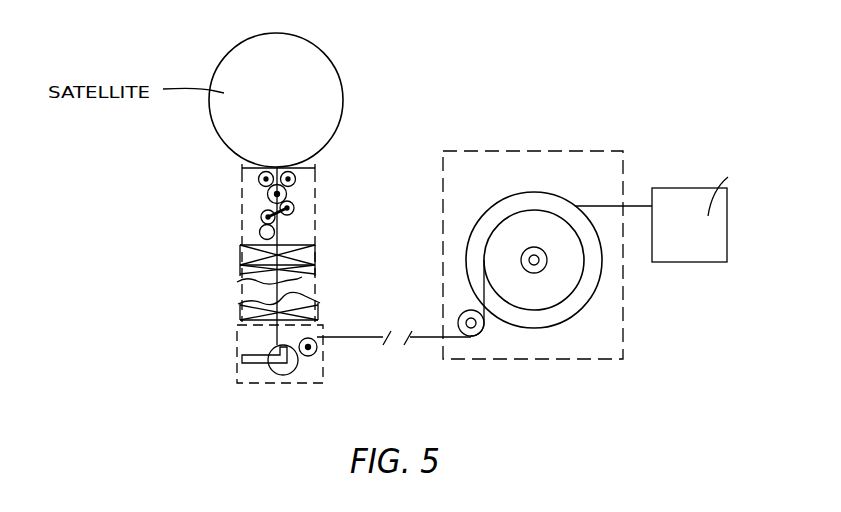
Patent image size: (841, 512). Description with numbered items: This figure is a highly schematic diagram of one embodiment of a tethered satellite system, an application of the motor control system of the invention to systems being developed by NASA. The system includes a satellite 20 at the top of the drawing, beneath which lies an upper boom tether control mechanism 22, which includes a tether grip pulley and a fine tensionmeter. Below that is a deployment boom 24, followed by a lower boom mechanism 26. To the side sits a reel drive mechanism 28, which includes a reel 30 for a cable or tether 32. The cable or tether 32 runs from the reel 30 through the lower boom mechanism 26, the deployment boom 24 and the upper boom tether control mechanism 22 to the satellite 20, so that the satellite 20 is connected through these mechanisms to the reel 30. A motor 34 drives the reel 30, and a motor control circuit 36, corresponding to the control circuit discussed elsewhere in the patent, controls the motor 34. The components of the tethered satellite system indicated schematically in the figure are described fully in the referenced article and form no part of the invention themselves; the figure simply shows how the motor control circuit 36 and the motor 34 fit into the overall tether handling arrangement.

The satellite 20 is at (332, 98).
The upper boom tether control mechanism 22 is at (239, 213).
The deployment boom 24 is at (318, 267).
The lower boom mechanism 26 is at (236, 353).
The reel drive mechanism 28 is at (522, 362).
The reel 30 is at (565, 276).
The cable or tether 32 is at (278, 237).
The motor 34 is at (553, 200).
The motor control circuit 36 is at (722, 224).